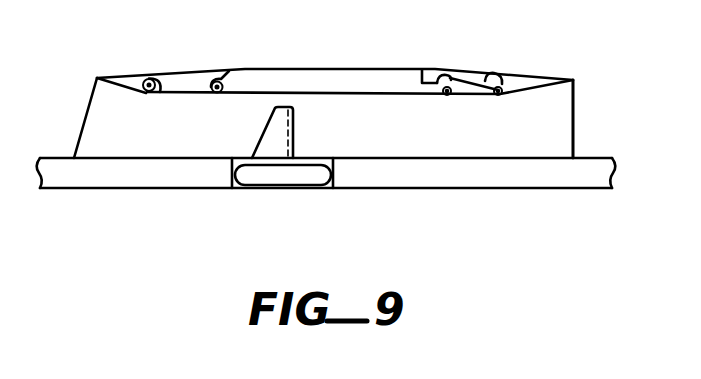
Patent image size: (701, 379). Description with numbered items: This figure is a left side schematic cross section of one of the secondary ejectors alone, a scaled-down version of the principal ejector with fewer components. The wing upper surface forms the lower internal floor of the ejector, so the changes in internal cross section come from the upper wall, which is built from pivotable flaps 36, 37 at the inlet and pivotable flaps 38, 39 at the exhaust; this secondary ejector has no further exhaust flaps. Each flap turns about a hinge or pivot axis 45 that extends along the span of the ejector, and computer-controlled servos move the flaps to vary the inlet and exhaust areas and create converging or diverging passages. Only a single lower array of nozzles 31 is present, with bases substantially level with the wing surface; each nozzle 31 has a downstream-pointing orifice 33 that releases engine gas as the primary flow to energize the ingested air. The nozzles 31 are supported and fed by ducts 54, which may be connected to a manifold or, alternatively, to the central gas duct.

The nozzle 31 is at (273, 143).
The orifice 33 is at (297, 127).
The pivotable flap 36 is at (130, 82).
The pivotable flap 37 is at (192, 80).
The pivotable flap 38 is at (462, 90).
The pivotable flap 39 is at (527, 90).
The hinge or pivot axis 45 is at (214, 93).
The duct 54 is at (305, 173).